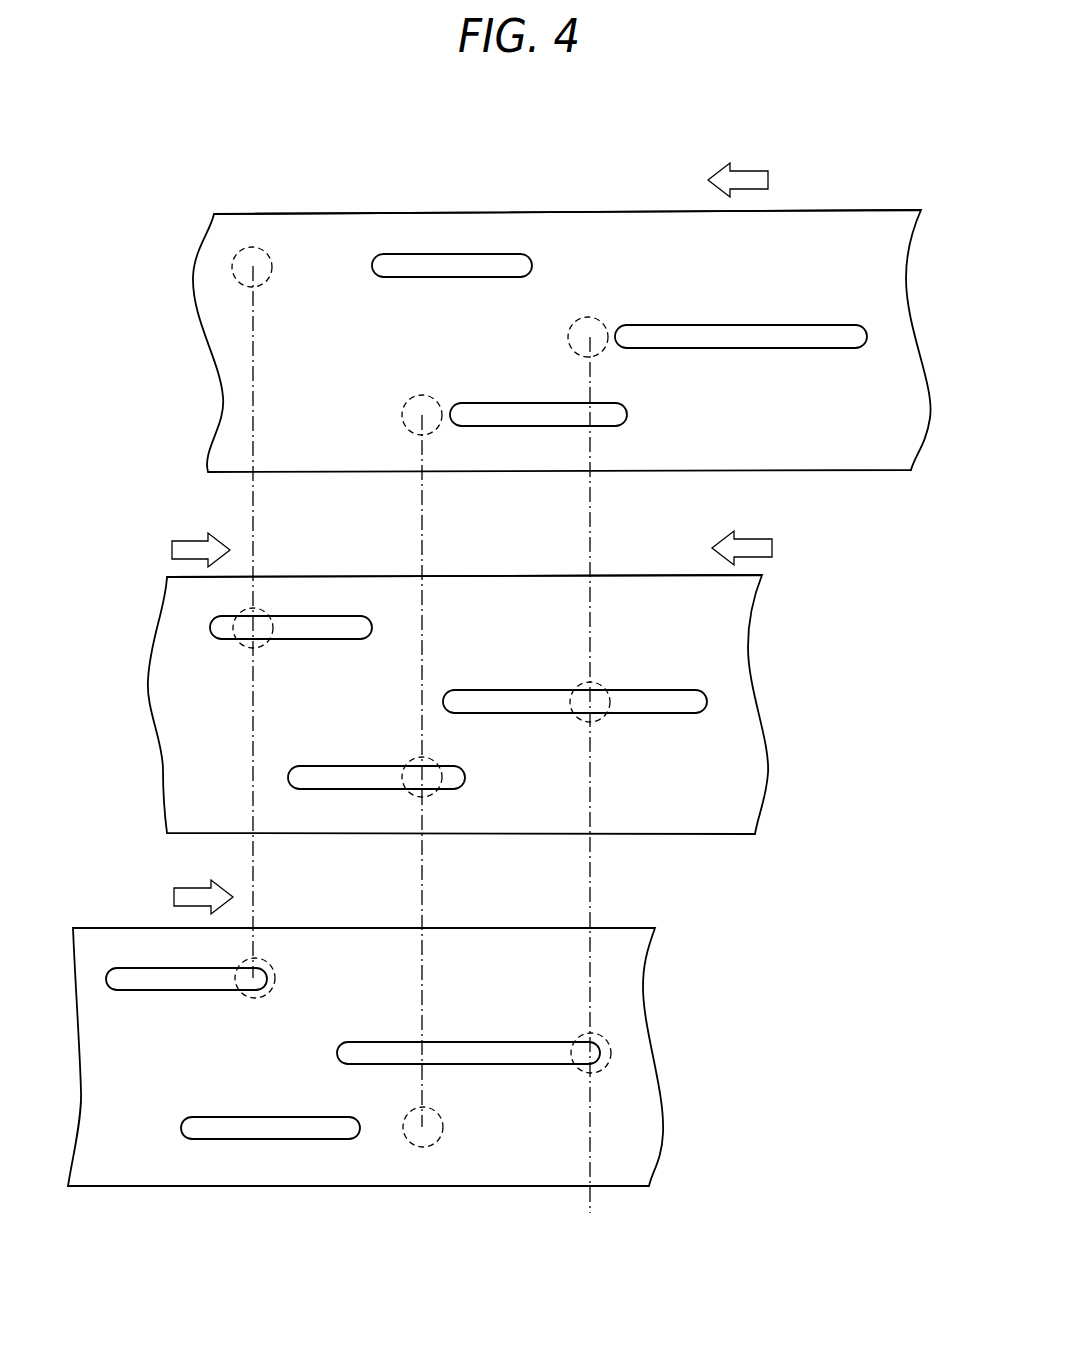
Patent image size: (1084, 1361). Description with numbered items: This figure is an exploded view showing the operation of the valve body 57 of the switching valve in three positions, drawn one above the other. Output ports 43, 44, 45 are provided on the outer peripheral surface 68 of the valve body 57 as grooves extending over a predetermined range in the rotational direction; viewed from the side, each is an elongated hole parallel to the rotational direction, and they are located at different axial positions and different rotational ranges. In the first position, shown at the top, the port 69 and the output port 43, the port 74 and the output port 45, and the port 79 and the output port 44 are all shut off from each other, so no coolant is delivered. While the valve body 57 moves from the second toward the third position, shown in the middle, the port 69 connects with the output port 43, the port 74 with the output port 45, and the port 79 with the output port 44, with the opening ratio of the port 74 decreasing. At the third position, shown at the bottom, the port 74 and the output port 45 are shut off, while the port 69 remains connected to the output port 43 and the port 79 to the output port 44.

The valve body 57 is at (843, 190).
The outer peripheral surface 68 is at (345, 230).
The output port 43 is at (842, 340).
The output port 44 is at (462, 272).
The output port 45 is at (518, 416).
The port 69 is at (590, 332).
The port 74 is at (404, 432).
The port 79 is at (255, 246).